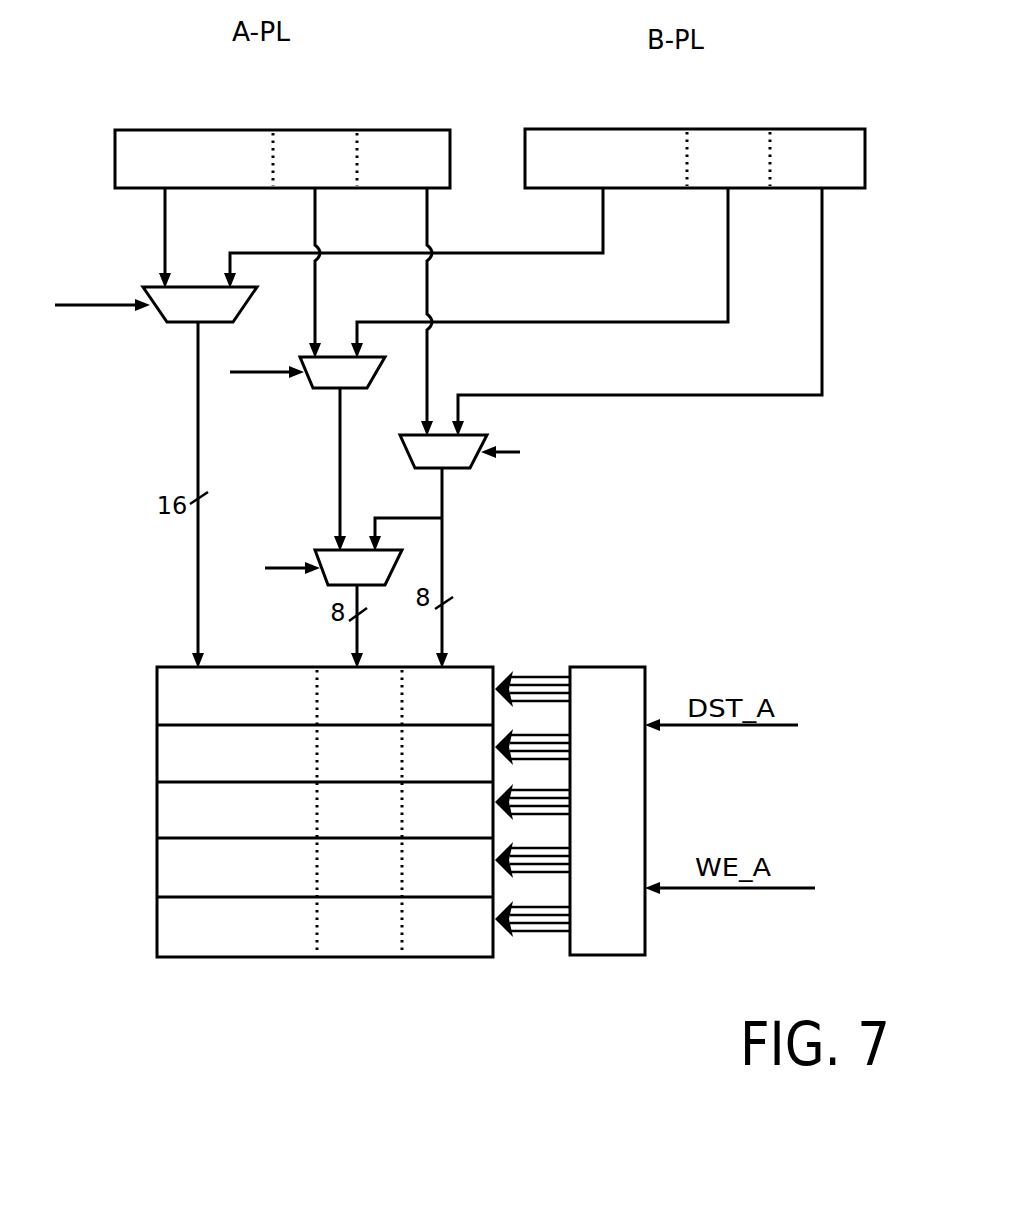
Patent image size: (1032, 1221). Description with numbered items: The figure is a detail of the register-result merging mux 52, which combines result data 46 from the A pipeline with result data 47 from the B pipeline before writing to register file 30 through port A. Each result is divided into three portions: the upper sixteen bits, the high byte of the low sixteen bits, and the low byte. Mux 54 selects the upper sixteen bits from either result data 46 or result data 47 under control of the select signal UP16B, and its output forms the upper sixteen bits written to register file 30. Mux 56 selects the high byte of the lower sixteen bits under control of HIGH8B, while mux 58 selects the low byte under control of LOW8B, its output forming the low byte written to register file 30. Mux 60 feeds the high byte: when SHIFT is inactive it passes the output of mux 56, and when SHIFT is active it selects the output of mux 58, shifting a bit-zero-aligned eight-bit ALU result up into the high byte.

The register file 30 is at (218, 958).
The A pipeline result data 46 is at (115, 166).
The B pipeline result data 47 is at (865, 188).
The register-result merging mux 52 is at (612, 510).
The mux 54 is at (165, 324).
The mux 56 is at (328, 390).
The mux 58 is at (450, 470).
The mux 60 is at (331, 587).